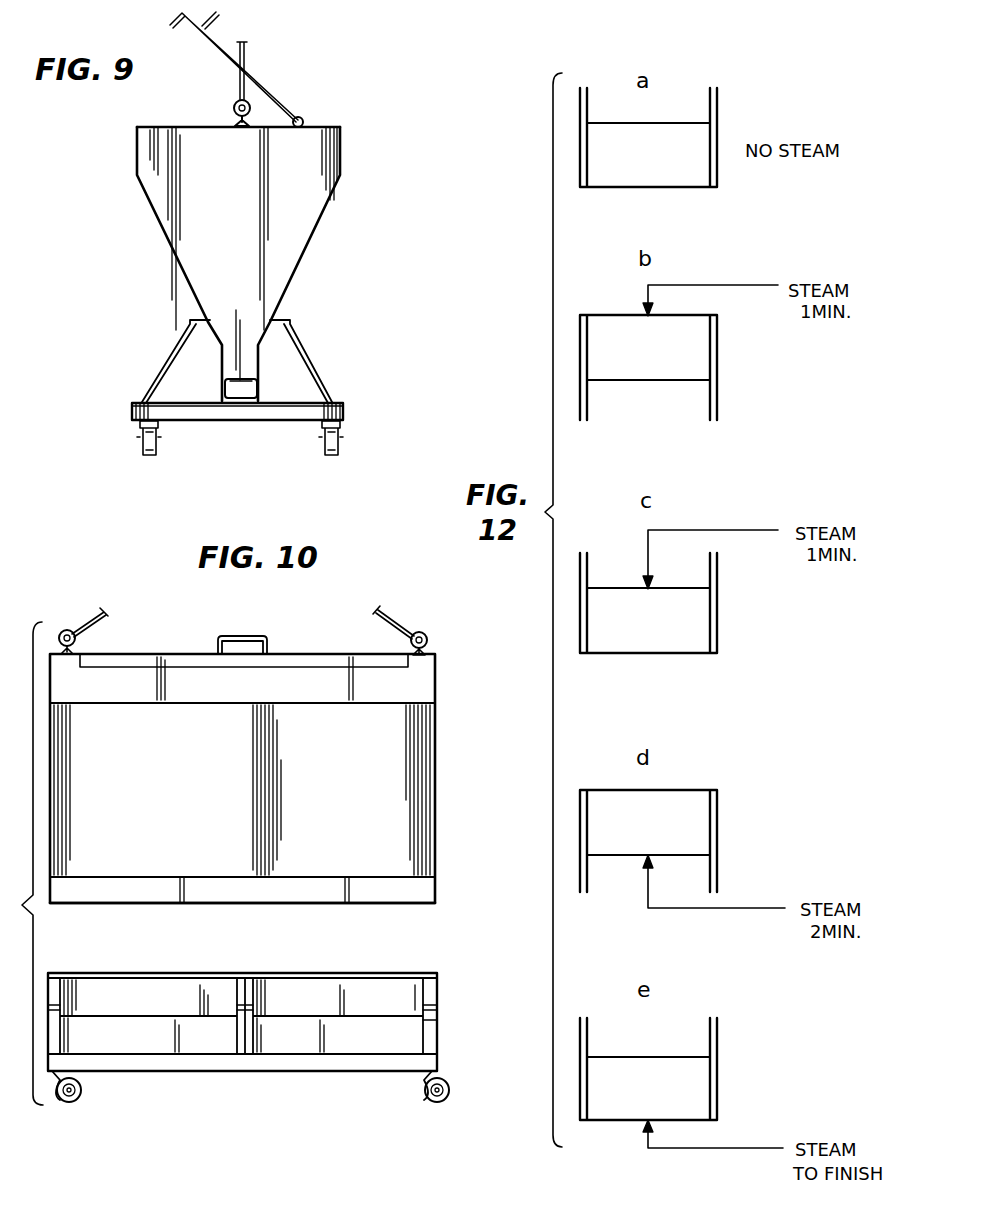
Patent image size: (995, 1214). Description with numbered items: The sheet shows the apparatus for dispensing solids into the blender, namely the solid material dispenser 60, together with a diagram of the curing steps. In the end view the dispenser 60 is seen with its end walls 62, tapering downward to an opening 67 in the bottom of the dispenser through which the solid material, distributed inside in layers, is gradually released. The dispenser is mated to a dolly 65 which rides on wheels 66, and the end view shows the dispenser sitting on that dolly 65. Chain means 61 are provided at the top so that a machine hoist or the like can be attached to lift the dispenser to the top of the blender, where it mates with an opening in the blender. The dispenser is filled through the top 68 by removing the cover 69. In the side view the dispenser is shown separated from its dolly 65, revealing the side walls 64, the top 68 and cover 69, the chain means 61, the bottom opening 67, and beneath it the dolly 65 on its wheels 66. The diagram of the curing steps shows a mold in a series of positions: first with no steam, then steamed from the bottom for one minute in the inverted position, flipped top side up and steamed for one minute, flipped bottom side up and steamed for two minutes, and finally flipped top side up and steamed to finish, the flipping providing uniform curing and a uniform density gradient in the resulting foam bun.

In FIG. 9, the solid material dispenser 60 is at (330, 165).
In FIG. 10, the solid material dispenser 60 is at (420, 744).
In FIG. 9, the chain means 61 is at (246, 48).
In FIG. 10, the chain means 61 is at (100, 614).
In FIG. 9, the end walls 62 is at (235, 209).
In FIG. 10, the side walls 64 is at (338, 788).
In FIG. 9, the dolly 65 is at (251, 412).
In FIG. 10, the dolly 65 is at (445, 1032).
In FIG. 9, the wheels 66 is at (340, 449).
In FIG. 10, the wheels 66 is at (450, 1088).
In FIG. 9, the opening 67 is at (262, 392).
In FIG. 10, the opening 67 is at (412, 905).
In FIG. 9, the top 68 is at (166, 126).
In FIG. 9, the cover 69 is at (280, 96).
In FIG. 10, the cover 69 is at (313, 656).